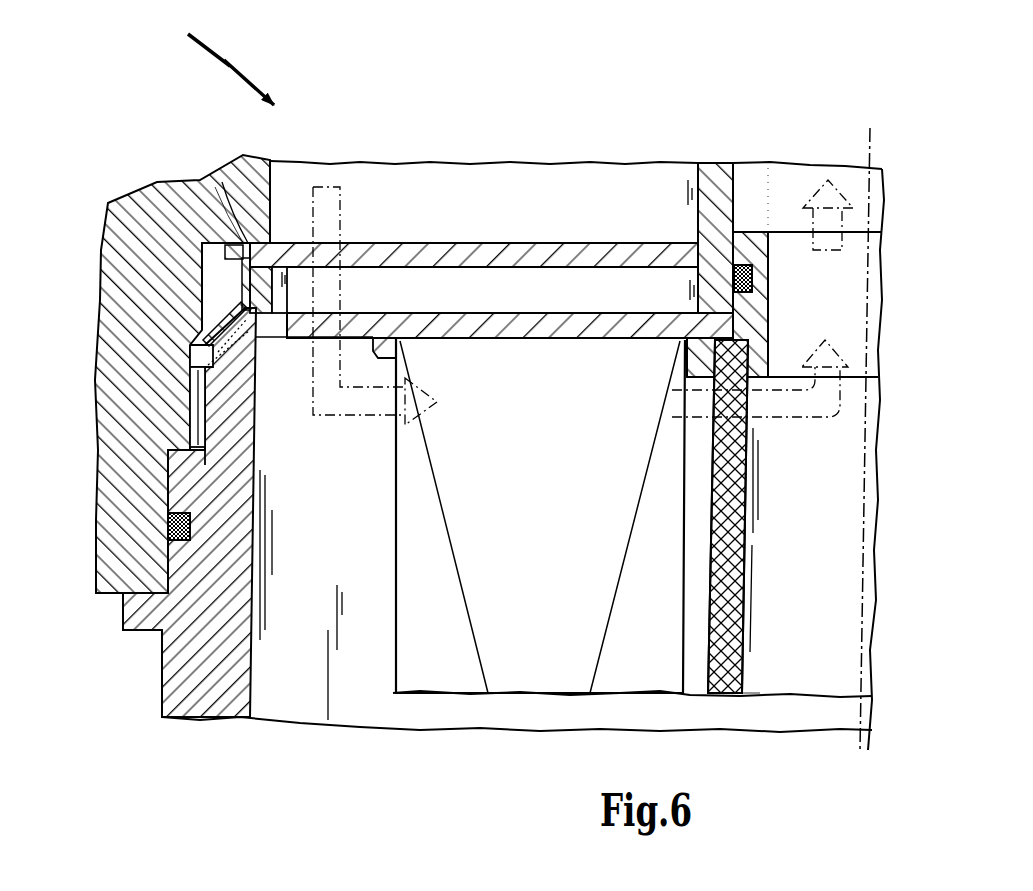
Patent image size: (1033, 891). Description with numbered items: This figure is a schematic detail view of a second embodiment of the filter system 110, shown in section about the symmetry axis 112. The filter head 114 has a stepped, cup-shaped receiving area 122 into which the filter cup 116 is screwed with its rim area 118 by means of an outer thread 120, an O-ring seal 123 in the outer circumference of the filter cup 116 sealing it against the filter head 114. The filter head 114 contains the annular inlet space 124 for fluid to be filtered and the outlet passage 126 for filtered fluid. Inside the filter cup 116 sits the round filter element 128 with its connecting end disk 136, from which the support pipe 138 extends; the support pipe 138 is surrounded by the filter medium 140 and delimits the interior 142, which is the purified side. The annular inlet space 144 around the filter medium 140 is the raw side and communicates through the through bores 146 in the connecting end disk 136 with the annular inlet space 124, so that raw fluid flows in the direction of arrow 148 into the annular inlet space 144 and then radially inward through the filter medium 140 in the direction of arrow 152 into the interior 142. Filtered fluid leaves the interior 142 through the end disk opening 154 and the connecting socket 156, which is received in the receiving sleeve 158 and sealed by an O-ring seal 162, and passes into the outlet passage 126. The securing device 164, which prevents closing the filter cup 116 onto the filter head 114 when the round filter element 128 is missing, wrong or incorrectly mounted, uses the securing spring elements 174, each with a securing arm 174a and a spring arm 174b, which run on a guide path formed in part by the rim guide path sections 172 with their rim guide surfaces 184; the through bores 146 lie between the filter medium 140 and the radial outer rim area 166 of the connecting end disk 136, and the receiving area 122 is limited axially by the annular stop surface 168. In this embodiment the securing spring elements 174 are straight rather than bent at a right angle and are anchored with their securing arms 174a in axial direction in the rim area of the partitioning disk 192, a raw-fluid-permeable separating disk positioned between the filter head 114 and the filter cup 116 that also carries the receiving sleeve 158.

The filter system 110 is at (221, 57).
The symmetry axis 112 is at (868, 157).
The filter head 114 is at (175, 205).
The filter cup 116 is at (192, 682).
The rim area 118 is at (254, 430).
The outer thread 120 is at (190, 412).
The receiving area 122 is at (182, 460).
The O-ring seal 123 is at (172, 525).
The annular inlet space 124 is at (522, 207).
The outlet passage 126 is at (793, 187).
The round filter element 128 is at (757, 670).
The connecting end disk 136 is at (601, 338).
The support pipe 138 is at (726, 676).
The filter medium 140 is at (538, 672).
The interior 142 is at (812, 618).
The annular inlet space 144 is at (364, 555).
The through bores 146 is at (365, 322).
The arrow 148 is at (336, 185).
The arrow 152 is at (803, 420).
The end disk opening 154 is at (840, 330).
The connecting socket 156 is at (758, 195).
The receiving sleeve 158 is at (712, 182).
The O-ring seal 162 is at (755, 278).
The securing device 164 is at (215, 292).
The radial outer rim area 166 is at (270, 338).
The annular stop surface 168 is at (257, 237).
The rim guide path sections 172 is at (256, 298).
The securing spring elements 174 is at (226, 195).
The securing arm 174a is at (232, 256).
The spring arm 174b is at (212, 338).
The rim guide surfaces 184 is at (226, 346).
The partitioning disk 192 is at (598, 243).